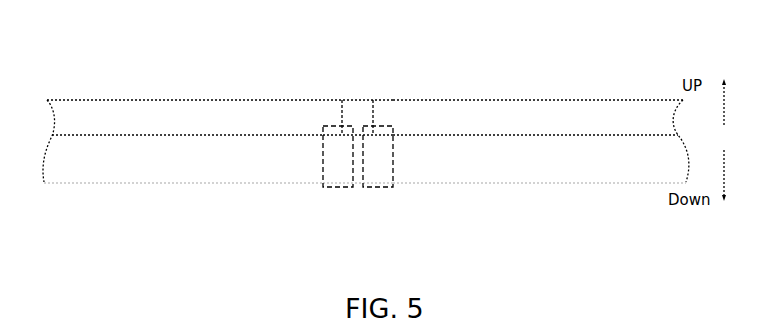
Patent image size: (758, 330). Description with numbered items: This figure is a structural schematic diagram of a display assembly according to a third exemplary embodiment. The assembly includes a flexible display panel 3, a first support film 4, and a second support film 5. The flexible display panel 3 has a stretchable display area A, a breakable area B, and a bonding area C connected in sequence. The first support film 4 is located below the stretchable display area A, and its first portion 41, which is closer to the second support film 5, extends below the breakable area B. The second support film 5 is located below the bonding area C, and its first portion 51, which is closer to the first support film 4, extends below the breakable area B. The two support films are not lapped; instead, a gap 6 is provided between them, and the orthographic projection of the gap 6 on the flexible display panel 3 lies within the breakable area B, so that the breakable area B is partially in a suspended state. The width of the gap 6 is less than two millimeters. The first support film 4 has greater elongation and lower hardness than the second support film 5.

The flexible display panel 3 is at (403, 63).
The first support film 4 is at (210, 170).
The first portion 41 is at (338, 188).
The second support film 5 is at (487, 168).
The first portion 51 is at (383, 188).
The gap 6 is at (353, 187).